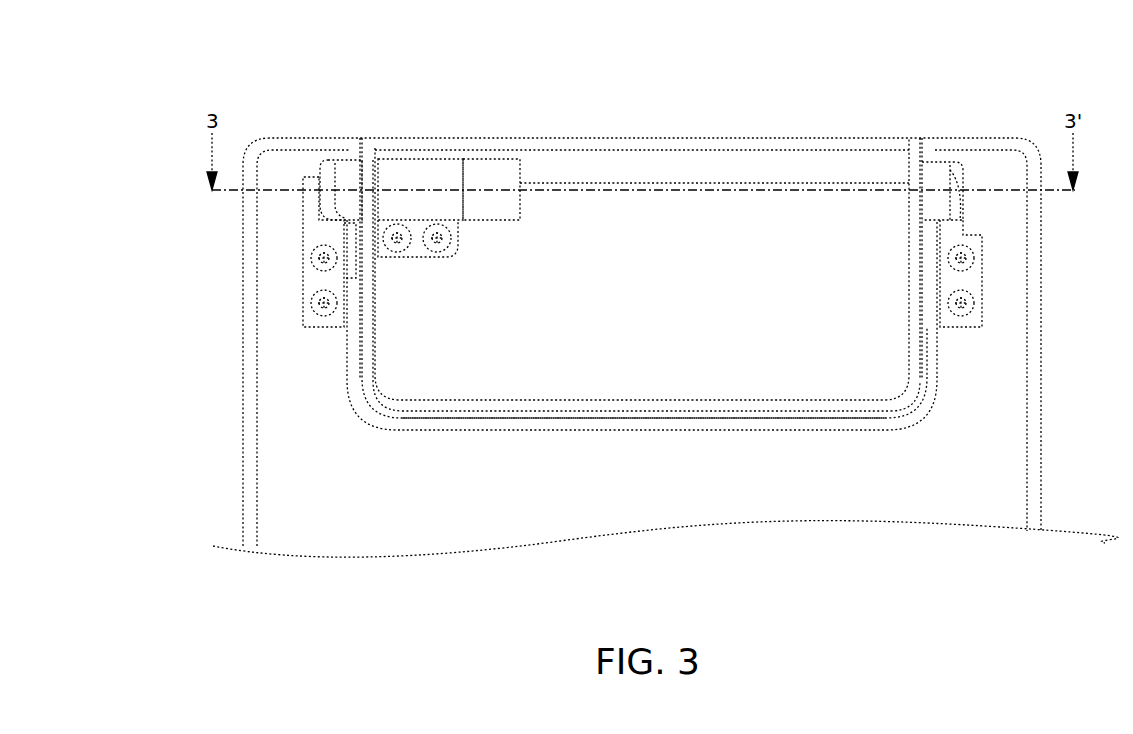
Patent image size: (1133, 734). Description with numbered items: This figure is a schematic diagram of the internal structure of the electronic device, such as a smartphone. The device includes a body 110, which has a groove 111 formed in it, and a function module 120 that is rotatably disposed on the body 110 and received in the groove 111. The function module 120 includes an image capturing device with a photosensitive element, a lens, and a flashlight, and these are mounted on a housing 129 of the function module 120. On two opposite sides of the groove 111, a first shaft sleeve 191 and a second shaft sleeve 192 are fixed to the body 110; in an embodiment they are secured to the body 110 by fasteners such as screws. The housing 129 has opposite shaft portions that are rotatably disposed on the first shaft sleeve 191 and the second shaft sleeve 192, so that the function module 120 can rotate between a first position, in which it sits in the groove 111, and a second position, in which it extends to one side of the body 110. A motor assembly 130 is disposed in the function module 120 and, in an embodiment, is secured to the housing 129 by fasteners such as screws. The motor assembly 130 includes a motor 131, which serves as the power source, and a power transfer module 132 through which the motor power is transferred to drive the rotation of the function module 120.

The body 110 is at (1034, 438).
The groove 111 is at (573, 418).
The function module 120 is at (683, 103).
The housing 129 is at (813, 165).
The motor assembly 130 is at (467, 192).
The motor 131 is at (492, 163).
The power transfer module 132 is at (420, 165).
The first shaft sleeve 191 is at (315, 238).
The second shaft sleeve 192 is at (985, 270).